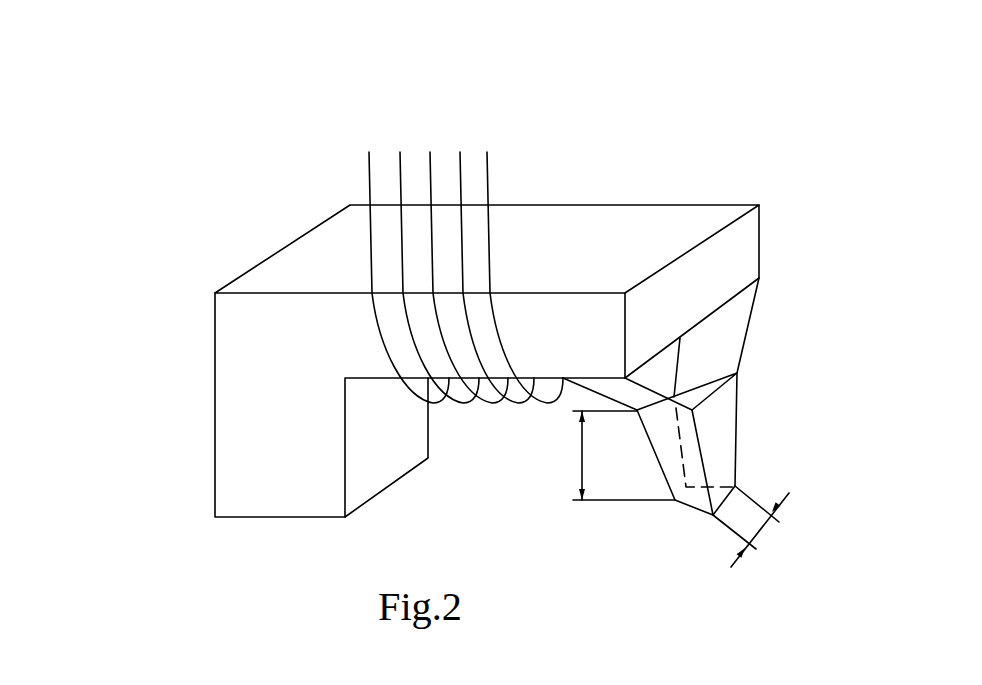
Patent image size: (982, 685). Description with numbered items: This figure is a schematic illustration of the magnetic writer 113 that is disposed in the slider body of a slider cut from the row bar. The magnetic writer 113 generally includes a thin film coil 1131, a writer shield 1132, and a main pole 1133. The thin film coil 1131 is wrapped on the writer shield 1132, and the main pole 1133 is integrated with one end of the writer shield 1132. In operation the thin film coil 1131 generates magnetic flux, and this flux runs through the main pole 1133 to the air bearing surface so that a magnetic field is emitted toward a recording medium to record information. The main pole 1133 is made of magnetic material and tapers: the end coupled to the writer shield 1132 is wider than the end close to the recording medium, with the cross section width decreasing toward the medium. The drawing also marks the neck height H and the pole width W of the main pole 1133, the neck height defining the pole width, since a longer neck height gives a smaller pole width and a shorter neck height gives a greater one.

The magnetic writer 113 is at (138, 58).
The thin film coil 1131 is at (486, 190).
The writer shield 1132 is at (253, 345).
The main pole 1133 is at (730, 335).